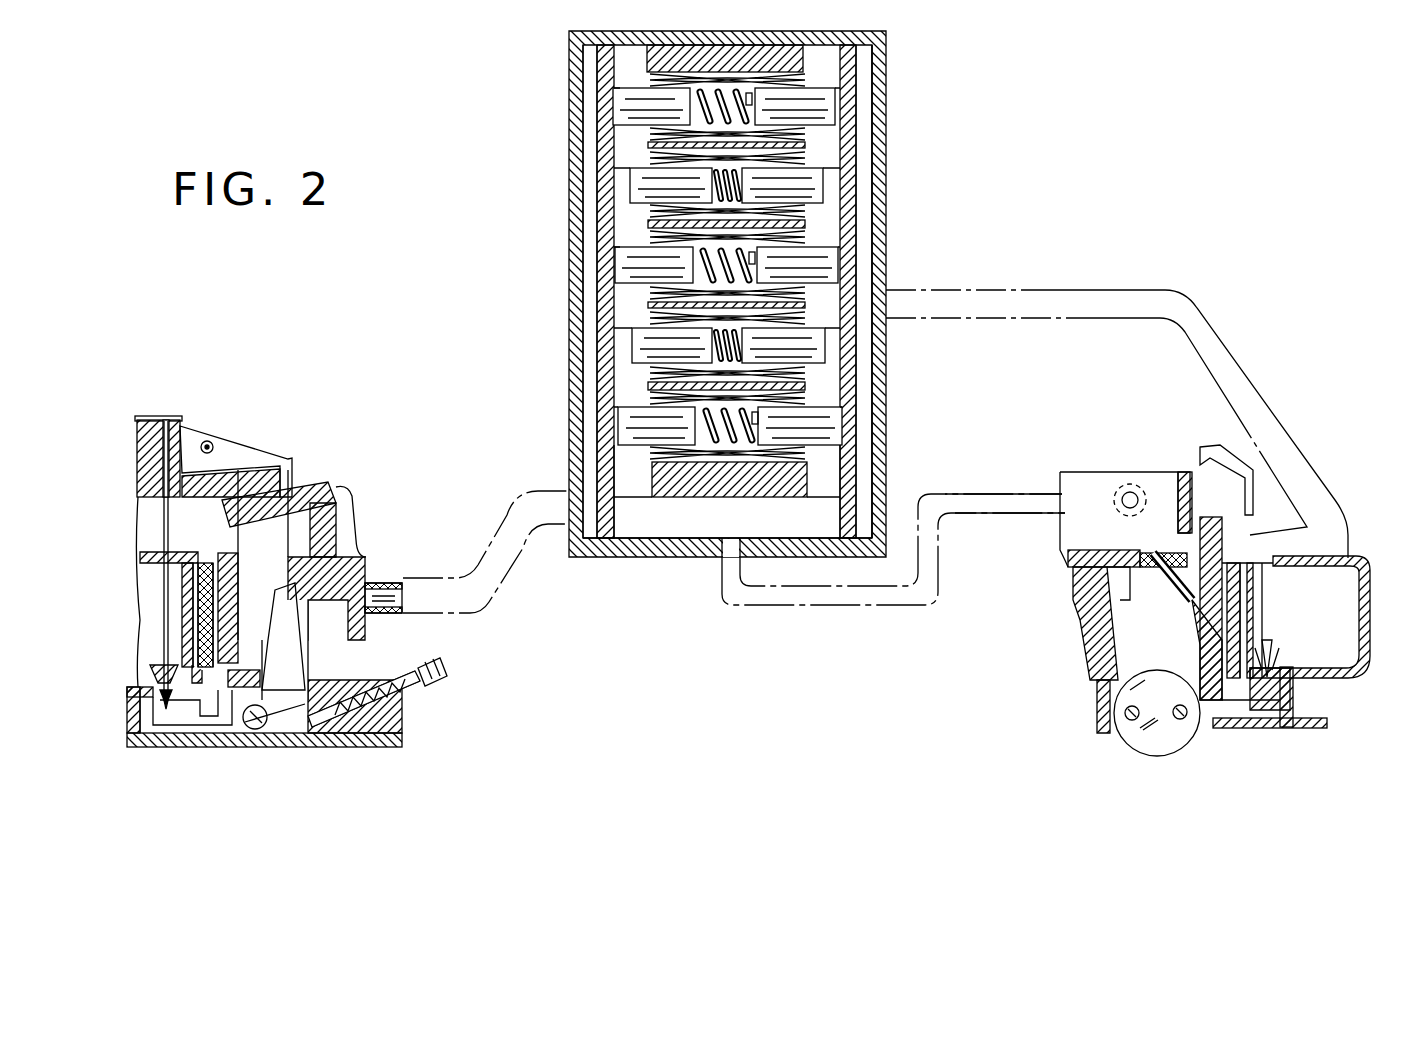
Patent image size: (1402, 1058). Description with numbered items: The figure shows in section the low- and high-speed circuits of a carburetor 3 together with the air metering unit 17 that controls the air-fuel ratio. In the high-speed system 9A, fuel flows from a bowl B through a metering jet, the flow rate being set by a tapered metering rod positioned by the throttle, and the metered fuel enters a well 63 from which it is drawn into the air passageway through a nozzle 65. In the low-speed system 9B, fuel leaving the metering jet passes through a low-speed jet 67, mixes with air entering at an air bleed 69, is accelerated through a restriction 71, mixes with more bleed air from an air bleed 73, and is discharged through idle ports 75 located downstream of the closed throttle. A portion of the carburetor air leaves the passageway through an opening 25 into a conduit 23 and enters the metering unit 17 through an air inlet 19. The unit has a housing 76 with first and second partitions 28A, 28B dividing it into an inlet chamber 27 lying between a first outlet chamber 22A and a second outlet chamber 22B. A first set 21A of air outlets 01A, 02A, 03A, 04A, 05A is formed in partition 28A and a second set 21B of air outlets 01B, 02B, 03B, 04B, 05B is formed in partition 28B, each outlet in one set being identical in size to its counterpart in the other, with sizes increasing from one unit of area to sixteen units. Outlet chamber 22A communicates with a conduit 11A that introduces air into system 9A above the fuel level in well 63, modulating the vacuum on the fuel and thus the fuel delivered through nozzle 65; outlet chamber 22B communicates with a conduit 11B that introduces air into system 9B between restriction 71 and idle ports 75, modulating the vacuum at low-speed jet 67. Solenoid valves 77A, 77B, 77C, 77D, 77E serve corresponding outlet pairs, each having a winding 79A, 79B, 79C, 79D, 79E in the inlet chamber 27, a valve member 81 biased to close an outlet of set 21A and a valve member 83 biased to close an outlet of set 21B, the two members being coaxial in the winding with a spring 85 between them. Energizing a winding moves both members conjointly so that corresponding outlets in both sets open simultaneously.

The air metering unit 17 is at (558, 68).
The housing 76 is at (880, 130).
The inlet chamber 27 is at (655, 558).
The first set of air outlets 21A is at (850, 222).
The second set of air outlets 21B is at (595, 263).
The first outlet chamber 22A is at (864, 160).
The second outlet chamber 22B is at (590, 162).
The solenoid valve 77A is at (817, 70).
The solenoid valve 77B is at (820, 213).
The solenoid valve 77C is at (825, 238).
The solenoid valve 77D is at (820, 375).
The solenoid valve 77E is at (830, 398).
The winding 79A is at (648, 146).
The winding 79B is at (648, 224).
The winding 79C is at (648, 305).
The winding 79D is at (648, 386).
The winding 79E is at (718, 475).
The air outlet 01A is at (835, 105).
The air outlet 01B is at (613, 100).
The air outlet 02A is at (823, 182).
The air outlet 02B is at (630, 182).
The air outlet 03A is at (838, 262).
The air outlet 03B is at (615, 265).
The air outlet 04A is at (825, 342).
The air outlet 04B is at (632, 345).
The air outlet 05A is at (842, 430).
The air outlet 05B is at (618, 428).
The first partition 28A is at (856, 468).
The second partition 28B is at (597, 480).
The valve member 81 is at (840, 132).
The valve member 83 is at (644, 452).
The spring 85 is at (724, 170).
The conduit 11A is at (1122, 283).
The conduit 11B is at (490, 530).
The air inlet 19 is at (730, 562).
The conduit 23 is at (997, 517).
The carburetor 3 is at (210, 782).
The high-speed fuel system 9A is at (1206, 710).
The low-speed fuel system 9B is at (238, 546).
The opening 25 is at (1115, 495).
The well 63 is at (1182, 640).
The nozzle 65 is at (1190, 550).
The low-speed jet 67 is at (232, 655).
The air bleed 69 is at (163, 540).
The restriction 71 is at (213, 512).
The air bleed 73 is at (294, 476).
The idle ports 75 is at (289, 720).
The bowl B is at (1368, 642).